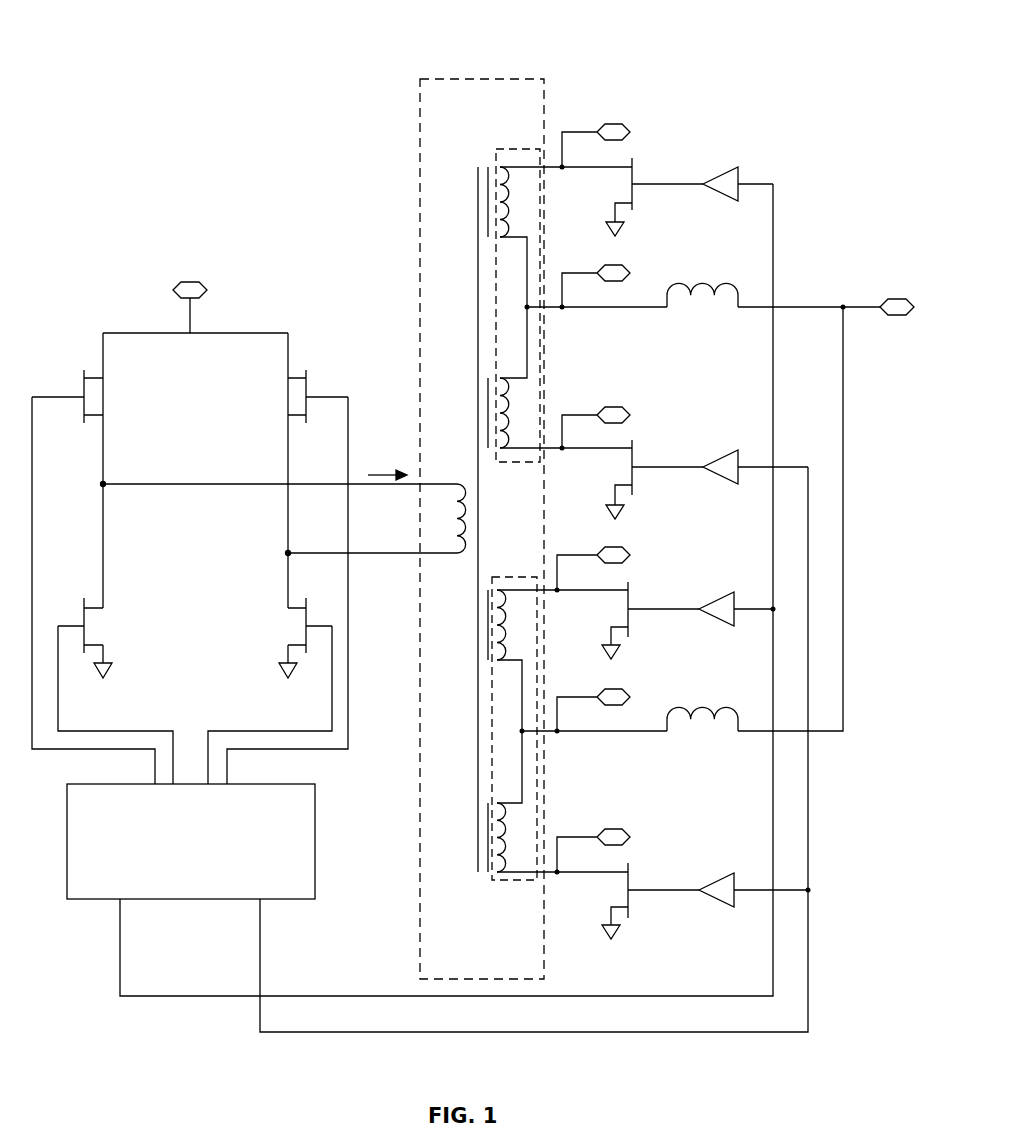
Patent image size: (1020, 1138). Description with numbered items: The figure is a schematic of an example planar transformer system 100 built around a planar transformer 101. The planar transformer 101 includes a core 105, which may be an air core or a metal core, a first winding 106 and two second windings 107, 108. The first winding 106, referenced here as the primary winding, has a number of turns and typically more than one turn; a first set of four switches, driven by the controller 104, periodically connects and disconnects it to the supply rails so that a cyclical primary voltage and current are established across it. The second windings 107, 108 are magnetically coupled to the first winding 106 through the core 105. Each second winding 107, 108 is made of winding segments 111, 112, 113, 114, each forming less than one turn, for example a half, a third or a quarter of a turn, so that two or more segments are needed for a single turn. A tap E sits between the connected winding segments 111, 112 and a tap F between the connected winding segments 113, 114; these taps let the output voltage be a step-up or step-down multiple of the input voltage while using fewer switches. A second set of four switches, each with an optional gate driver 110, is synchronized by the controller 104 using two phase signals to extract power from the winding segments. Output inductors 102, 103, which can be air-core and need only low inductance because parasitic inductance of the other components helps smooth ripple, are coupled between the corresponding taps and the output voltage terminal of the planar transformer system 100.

The planar transformer system 100 is at (294, 30).
The planar transformer 101 is at (500, 79).
The output inductor 102 is at (703, 298).
The output inductor 103 is at (703, 722).
The controller 104 is at (315, 818).
The core 105 is at (472, 858).
The first winding 106 is at (462, 510).
The second winding 107 is at (523, 149).
The second winding 108 is at (495, 882).
The gate driver 110 is at (718, 173).
The winding segment 111 is at (505, 205).
The winding segment 112 is at (505, 415).
The winding segment 113 is at (500, 625).
The winding segment 114 is at (500, 836).